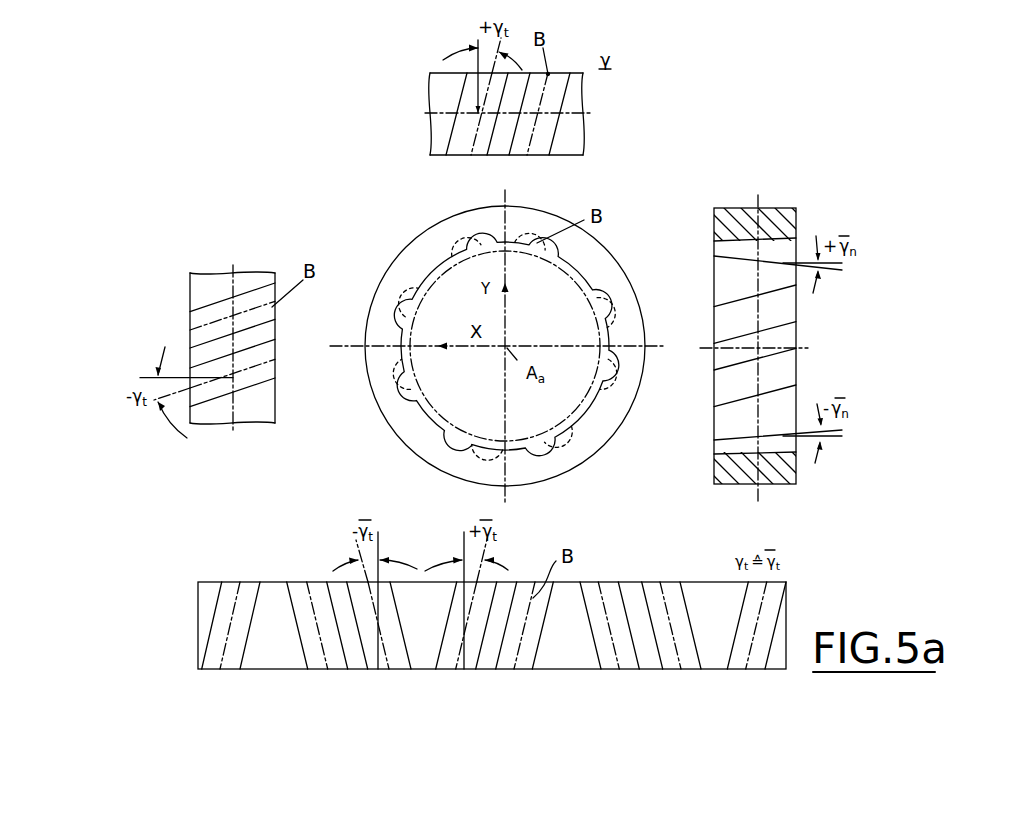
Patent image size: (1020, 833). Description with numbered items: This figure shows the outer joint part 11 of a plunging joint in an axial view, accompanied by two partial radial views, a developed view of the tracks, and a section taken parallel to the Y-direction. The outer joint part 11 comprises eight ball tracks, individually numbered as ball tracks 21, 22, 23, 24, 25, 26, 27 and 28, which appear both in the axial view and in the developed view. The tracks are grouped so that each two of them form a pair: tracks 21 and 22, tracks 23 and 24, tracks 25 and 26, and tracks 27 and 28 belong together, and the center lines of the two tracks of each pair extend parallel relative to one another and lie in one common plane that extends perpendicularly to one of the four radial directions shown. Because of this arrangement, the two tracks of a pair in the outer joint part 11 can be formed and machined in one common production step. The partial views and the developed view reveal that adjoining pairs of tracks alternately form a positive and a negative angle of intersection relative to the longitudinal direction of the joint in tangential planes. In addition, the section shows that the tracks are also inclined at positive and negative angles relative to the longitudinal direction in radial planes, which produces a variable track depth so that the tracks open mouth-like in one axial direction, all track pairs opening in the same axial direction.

The outer joint part 11 is at (600, 261).
The ball track 21 is at (455, 438).
The ball track 22 is at (538, 438).
The ball track 23 is at (612, 365).
The ball track 24 is at (600, 297).
The ball track 25 is at (552, 255).
The ball track 26 is at (480, 255).
The ball track 27 is at (411, 315).
The ball track 28 is at (413, 403).